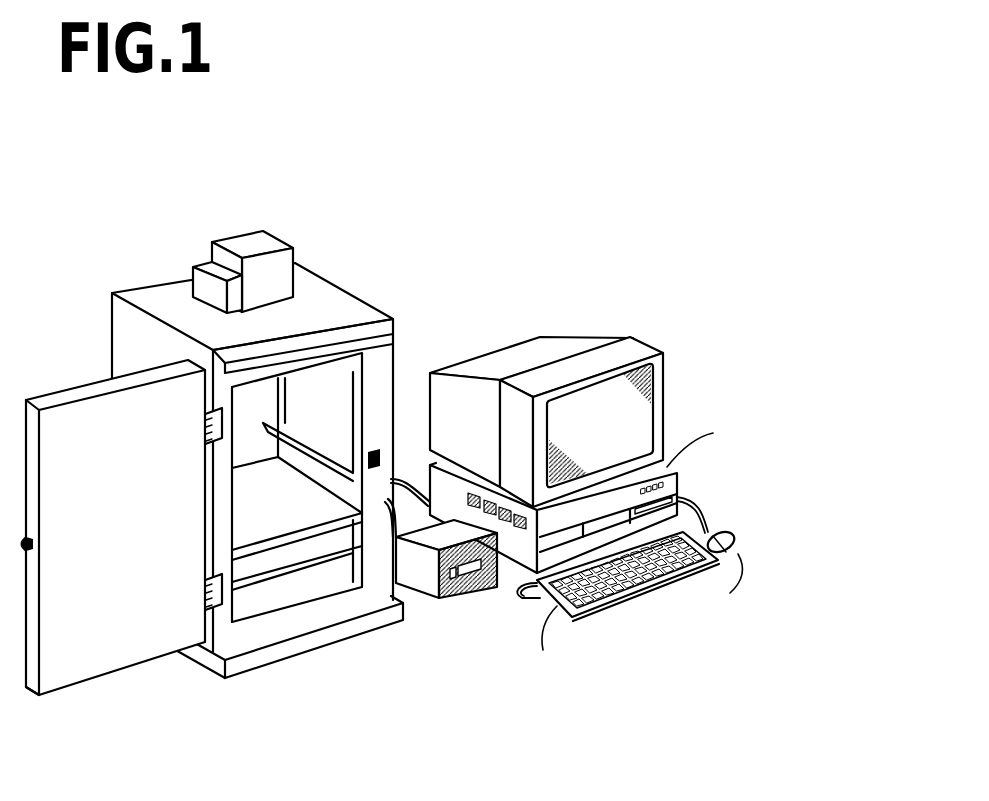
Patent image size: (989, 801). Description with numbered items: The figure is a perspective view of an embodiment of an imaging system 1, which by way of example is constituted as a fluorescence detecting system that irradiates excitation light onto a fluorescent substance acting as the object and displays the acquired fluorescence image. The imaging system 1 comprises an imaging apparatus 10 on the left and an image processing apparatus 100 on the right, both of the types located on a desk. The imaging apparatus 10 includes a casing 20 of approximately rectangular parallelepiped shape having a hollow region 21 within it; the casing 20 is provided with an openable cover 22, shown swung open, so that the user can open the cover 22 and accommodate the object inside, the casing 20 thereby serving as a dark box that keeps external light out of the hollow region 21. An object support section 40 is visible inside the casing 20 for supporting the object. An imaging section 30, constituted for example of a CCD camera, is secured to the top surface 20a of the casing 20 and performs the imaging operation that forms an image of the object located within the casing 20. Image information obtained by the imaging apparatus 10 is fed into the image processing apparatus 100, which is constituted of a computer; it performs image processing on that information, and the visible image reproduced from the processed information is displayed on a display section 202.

The imaging system 1 is at (484, 140).
The imaging apparatus 10 is at (240, 211).
The casing 20 is at (143, 293).
The top surface 20a is at (340, 298).
The hollow region 21 is at (337, 375).
The openable cover 22 is at (137, 650).
The imaging section 30 is at (305, 253).
The object support section 40 is at (320, 540).
The image processing apparatus 100 is at (609, 274).
The display section 202 is at (654, 400).